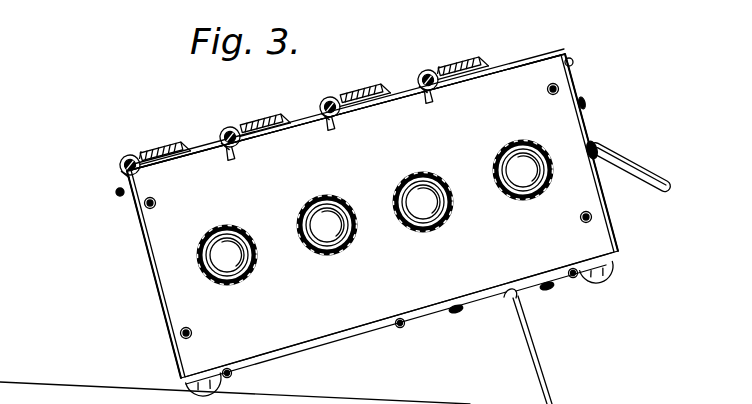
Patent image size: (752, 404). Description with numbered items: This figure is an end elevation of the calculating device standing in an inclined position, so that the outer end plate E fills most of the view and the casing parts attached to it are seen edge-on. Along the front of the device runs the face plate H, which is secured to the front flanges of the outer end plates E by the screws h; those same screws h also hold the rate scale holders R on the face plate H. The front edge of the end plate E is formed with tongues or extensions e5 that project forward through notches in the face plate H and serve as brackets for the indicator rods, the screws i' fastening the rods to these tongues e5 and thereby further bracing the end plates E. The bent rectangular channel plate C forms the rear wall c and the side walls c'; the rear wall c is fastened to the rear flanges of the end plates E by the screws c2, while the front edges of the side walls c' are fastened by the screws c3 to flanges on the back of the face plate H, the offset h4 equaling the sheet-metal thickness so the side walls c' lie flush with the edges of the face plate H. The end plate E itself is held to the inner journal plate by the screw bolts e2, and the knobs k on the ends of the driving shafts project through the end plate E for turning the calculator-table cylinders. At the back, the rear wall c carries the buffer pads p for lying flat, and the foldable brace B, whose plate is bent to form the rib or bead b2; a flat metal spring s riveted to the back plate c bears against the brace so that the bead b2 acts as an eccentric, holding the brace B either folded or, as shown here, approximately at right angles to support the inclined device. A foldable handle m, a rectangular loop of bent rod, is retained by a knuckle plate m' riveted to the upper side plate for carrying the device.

The outer end plate E is at (372, 216).
The side wall c' is at (404, 216).
The face plate H is at (206, 150).
The tongue or extension e5 is at (133, 154).
The insulating block I is at (176, 150).
The rate scale holder R is at (165, 162).
The screw h is at (176, 150).
The offset h4 is at (222, 162).
The screw i' is at (258, 132).
The knob k is at (371, 213).
The screw bolt e2 is at (148, 208).
The screw c3 is at (116, 194).
The foldable handle m is at (643, 171).
The knuckle plate m' is at (598, 128).
The rear wall c is at (396, 314).
The rib or bead b2 is at (500, 303).
The foldable brace B is at (535, 392).
The rectangular channel plate C is at (417, 316).
The flat metal spring s is at (501, 299).
The screw c2 is at (575, 278).
The buffer pad p is at (180, 380).